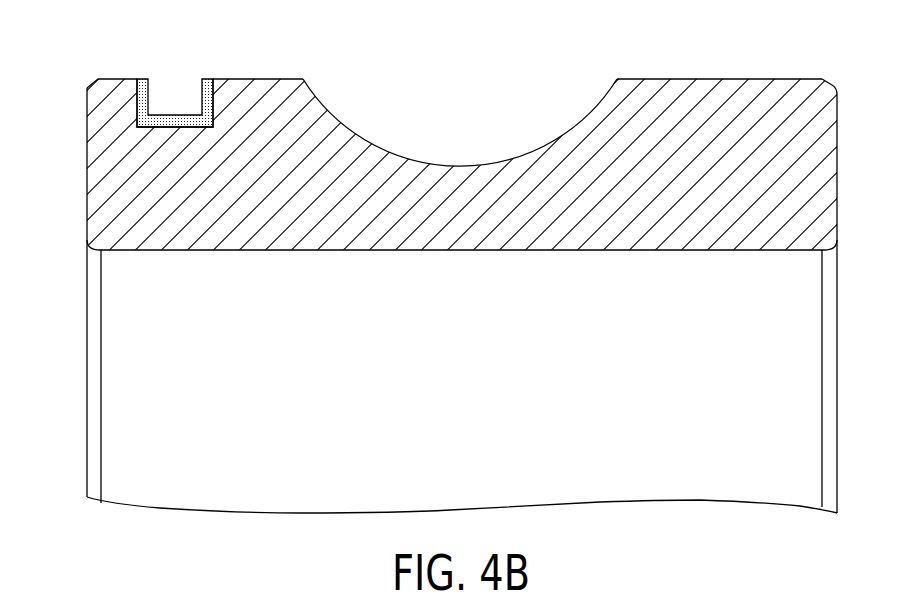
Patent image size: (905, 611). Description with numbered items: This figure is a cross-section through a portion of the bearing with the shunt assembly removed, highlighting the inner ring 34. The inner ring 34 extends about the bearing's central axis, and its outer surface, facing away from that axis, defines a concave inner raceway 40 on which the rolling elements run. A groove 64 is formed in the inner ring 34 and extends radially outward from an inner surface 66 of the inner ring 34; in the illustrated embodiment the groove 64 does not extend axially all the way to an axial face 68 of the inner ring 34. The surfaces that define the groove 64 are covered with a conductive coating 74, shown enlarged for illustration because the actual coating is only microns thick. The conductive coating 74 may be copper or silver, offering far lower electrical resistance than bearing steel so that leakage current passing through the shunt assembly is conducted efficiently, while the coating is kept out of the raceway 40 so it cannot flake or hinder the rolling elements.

The inner ring 34 is at (452, 258).
The concave inner raceway 40 is at (437, 163).
The groove 64 is at (166, 66).
The inner surface 66 is at (264, 79).
The axial face 68 is at (87, 176).
The conductive coating 74 is at (205, 80).